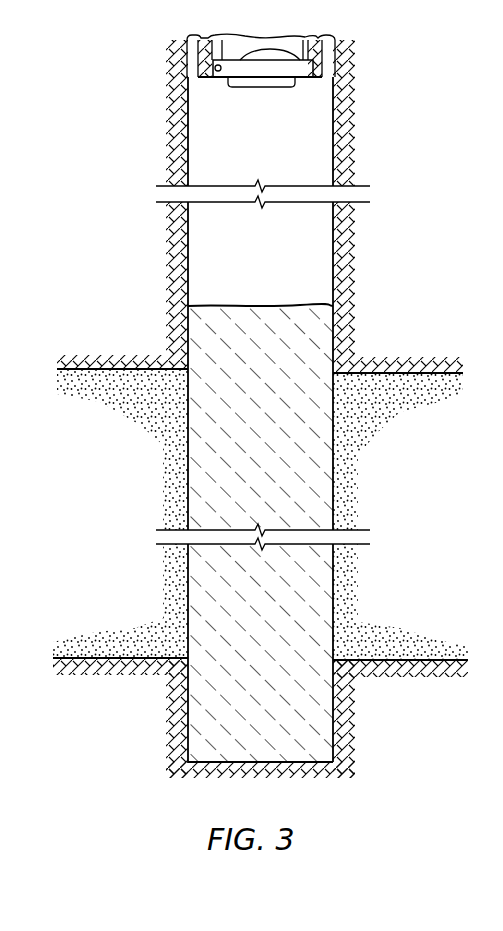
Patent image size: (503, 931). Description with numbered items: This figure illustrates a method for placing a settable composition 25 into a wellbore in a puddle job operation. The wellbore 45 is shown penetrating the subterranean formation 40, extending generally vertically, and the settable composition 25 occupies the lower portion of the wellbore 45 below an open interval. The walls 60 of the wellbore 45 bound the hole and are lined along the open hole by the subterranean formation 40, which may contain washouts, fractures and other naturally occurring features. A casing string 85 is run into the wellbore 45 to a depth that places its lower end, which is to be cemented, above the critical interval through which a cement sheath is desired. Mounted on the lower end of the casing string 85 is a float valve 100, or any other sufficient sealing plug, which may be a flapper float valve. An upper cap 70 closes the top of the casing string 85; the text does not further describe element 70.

The settable composition 25 is at (310, 306).
The subterranean formation 40 is at (108, 504).
The wellbore 45 is at (264, 263).
The walls of the wellbore 60 is at (336, 156).
The cap 70 is at (193, 49).
The casing string 85 is at (335, 46).
The float valve 100 is at (257, 88).